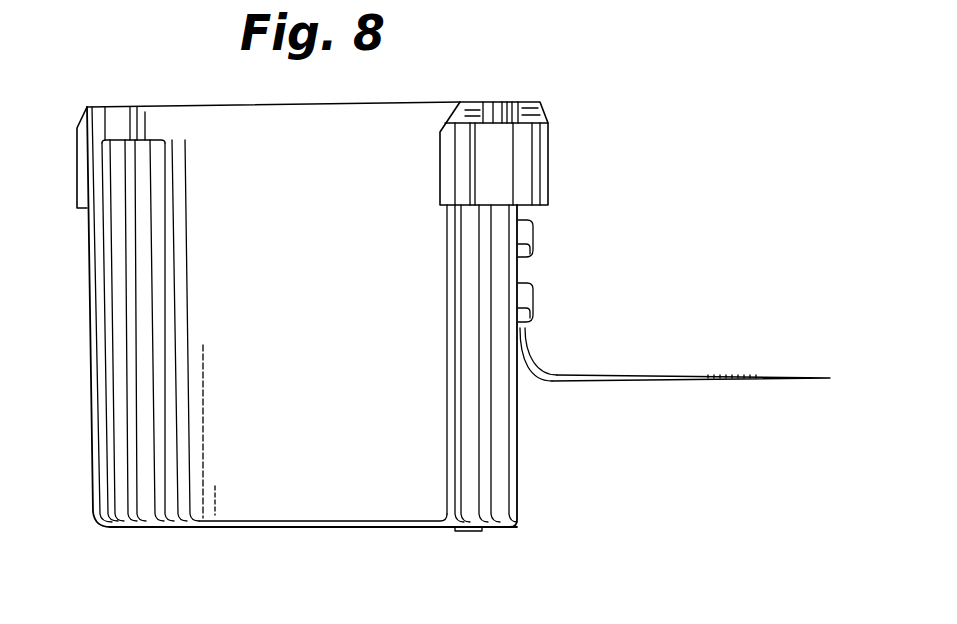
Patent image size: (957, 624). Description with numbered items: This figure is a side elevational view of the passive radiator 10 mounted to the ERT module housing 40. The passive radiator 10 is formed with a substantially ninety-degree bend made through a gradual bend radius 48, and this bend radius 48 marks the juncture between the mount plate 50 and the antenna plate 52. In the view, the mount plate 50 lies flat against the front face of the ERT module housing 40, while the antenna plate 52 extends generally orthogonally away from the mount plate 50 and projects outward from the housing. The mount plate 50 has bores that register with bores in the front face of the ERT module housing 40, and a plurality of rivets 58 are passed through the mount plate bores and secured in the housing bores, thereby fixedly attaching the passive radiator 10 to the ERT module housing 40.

The ERT module housing 40 is at (173, 107).
The mount plate 50 is at (533, 272).
The rivets 58 is at (533, 300).
The bend radius 48 is at (537, 384).
The antenna plate 52 is at (660, 382).
The passive radiator 10 is at (686, 362).